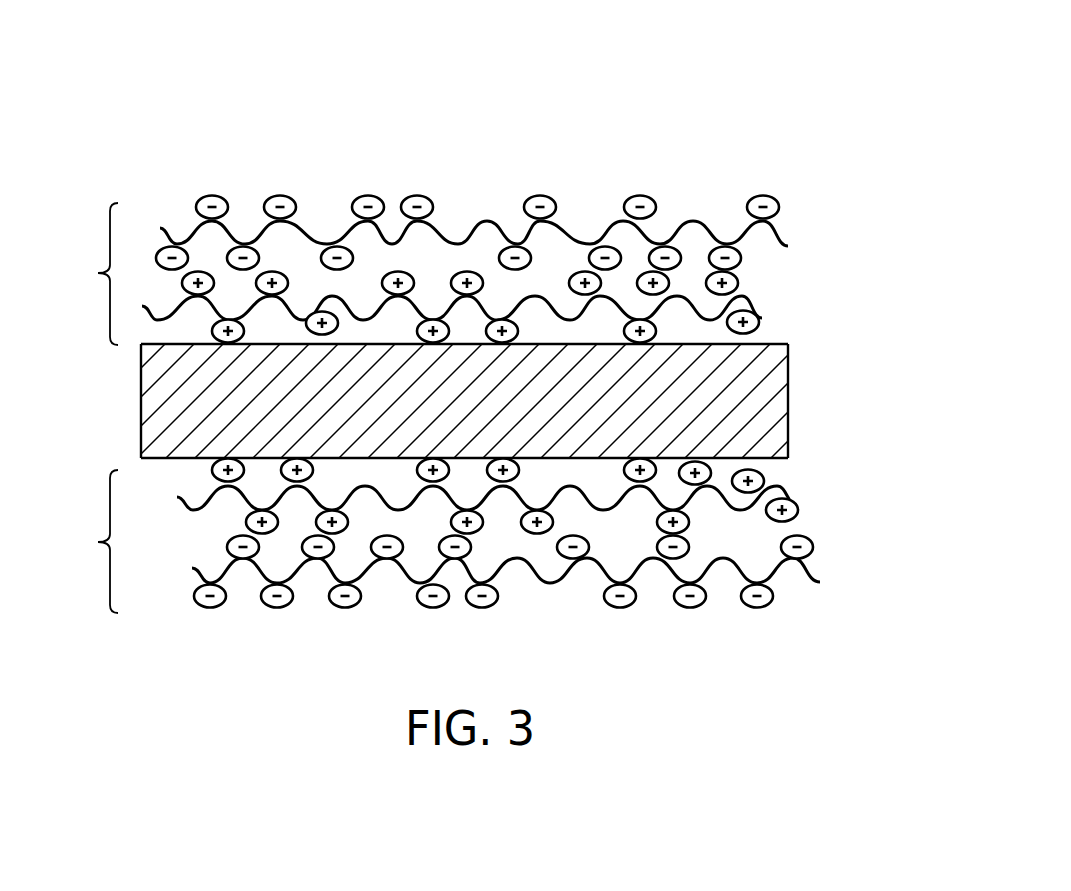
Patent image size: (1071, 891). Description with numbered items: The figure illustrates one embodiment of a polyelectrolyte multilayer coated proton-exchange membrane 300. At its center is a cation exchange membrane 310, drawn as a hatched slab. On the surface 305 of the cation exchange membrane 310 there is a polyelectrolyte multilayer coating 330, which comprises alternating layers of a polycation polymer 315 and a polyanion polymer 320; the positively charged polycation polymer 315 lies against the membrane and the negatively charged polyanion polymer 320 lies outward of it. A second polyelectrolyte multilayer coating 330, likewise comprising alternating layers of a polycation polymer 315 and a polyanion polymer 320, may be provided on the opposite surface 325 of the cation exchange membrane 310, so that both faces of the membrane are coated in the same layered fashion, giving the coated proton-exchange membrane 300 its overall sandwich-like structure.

The polyelectrolyte multilayer coated proton-exchange membrane 300 is at (823, 80).
The surface 305 is at (788, 344).
The cation exchange membrane 310 is at (142, 400).
The polycation polymer 315 is at (762, 323).
The polyanion polymer 320 is at (787, 247).
The opposite surface 325 is at (788, 459).
The polyelectrolyte multilayer coating 330 is at (490, 385).